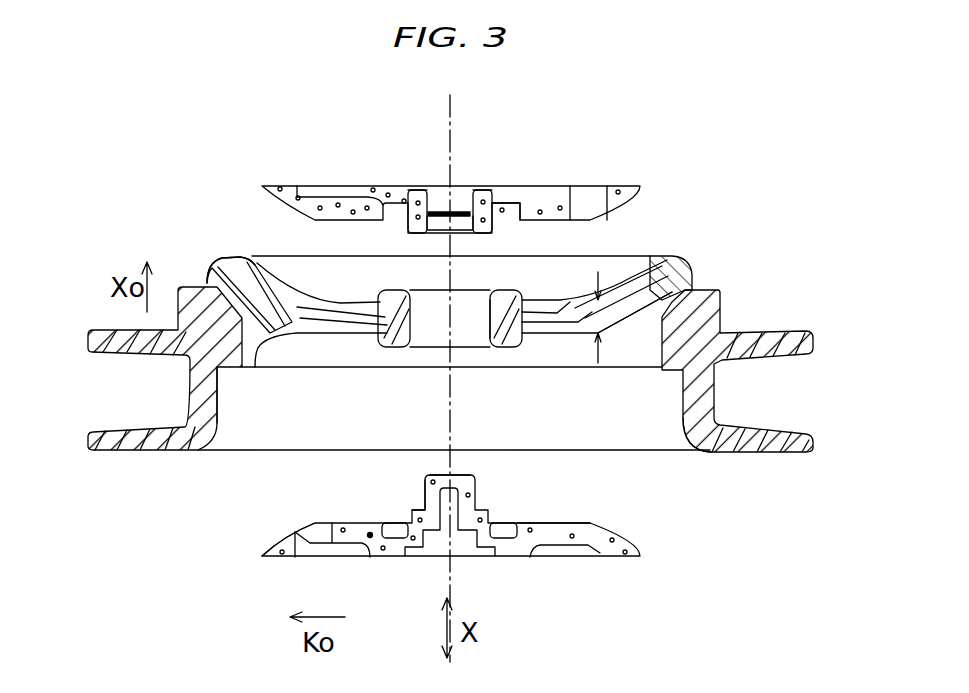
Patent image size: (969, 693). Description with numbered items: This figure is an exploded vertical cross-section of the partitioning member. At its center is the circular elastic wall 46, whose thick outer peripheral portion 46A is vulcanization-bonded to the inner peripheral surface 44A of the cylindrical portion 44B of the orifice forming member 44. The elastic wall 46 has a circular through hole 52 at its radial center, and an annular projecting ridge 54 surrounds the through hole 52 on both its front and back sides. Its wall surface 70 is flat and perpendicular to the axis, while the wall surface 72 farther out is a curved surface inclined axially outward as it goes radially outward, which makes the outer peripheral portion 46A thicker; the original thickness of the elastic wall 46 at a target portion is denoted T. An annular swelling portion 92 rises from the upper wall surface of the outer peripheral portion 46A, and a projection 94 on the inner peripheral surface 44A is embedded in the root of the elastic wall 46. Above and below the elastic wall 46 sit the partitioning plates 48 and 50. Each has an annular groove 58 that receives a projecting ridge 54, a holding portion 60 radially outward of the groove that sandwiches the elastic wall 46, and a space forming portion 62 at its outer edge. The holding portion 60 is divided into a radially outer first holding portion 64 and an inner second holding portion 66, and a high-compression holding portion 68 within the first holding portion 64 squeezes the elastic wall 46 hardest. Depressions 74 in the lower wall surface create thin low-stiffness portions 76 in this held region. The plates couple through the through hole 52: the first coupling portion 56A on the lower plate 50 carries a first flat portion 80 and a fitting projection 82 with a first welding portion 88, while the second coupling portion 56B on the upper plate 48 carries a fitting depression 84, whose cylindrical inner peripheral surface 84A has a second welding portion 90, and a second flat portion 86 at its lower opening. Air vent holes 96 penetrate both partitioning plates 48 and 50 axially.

The orifice forming member 44 is at (780, 333).
The inner peripheral surface 44A is at (678, 420).
The cylindrical portion 44B is at (705, 300).
The elastic wall 46 is at (612, 277).
The outer peripheral portion 46A is at (668, 300).
The partitioning plate 48 is at (563, 161).
The partitioning plate 50 is at (576, 565).
The through hole 52 is at (492, 322).
The projecting ridge 54 is at (522, 294).
The first coupling portion 56A is at (490, 520).
The second coupling portion 56B is at (415, 188).
The annular groove 58 is at (412, 222).
The holding portion 60 is at (347, 185).
The space forming portion 62 is at (287, 185).
The first holding portion 64 is at (312, 216).
The second holding portion 66 is at (365, 219).
The high-compression holding portion 68 is at (312, 523).
The wall surface 70 is at (368, 300).
The wall surface 72 is at (258, 292).
The depression 74 is at (317, 328).
The low-stiffness portion 76 is at (333, 310).
The first flat portion 80 is at (483, 510).
The fitting projection 82 is at (460, 477).
The fitting depression 84 is at (510, 292).
The inner peripheral surface 84A is at (465, 190).
The second flat portion 86 is at (478, 234).
The first welding portion 88 is at (424, 488).
The second welding portion 90 is at (446, 210).
The swelling portion 92 is at (222, 268).
The projection 94 is at (248, 370).
The air vent hole 96 is at (592, 203).
The original thickness T is at (600, 330).